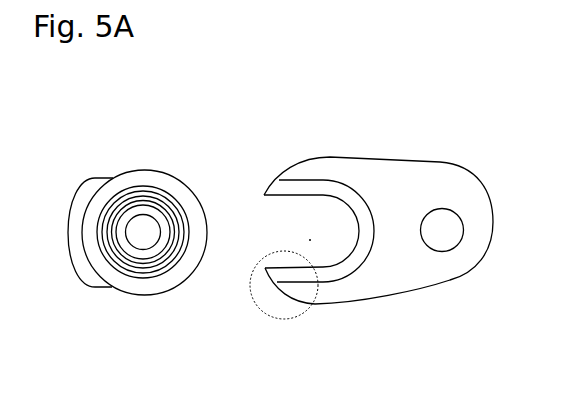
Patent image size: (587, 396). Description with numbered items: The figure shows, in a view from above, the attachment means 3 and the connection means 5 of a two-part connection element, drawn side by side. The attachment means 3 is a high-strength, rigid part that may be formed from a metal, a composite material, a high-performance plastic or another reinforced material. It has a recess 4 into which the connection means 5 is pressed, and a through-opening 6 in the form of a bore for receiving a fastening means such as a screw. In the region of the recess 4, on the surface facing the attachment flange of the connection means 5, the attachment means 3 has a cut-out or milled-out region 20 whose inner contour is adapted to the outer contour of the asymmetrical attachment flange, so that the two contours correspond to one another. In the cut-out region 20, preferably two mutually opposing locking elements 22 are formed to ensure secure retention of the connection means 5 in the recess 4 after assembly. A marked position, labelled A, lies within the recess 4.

The connection means 5 is at (105, 137).
The attachment means 3 is at (418, 193).
The recess 4 is at (336, 228).
The cut-out region 20 is at (310, 186).
The axis A is at (310, 240).
The through-opening 6 is at (442, 230).
The locking element 22 is at (264, 197).